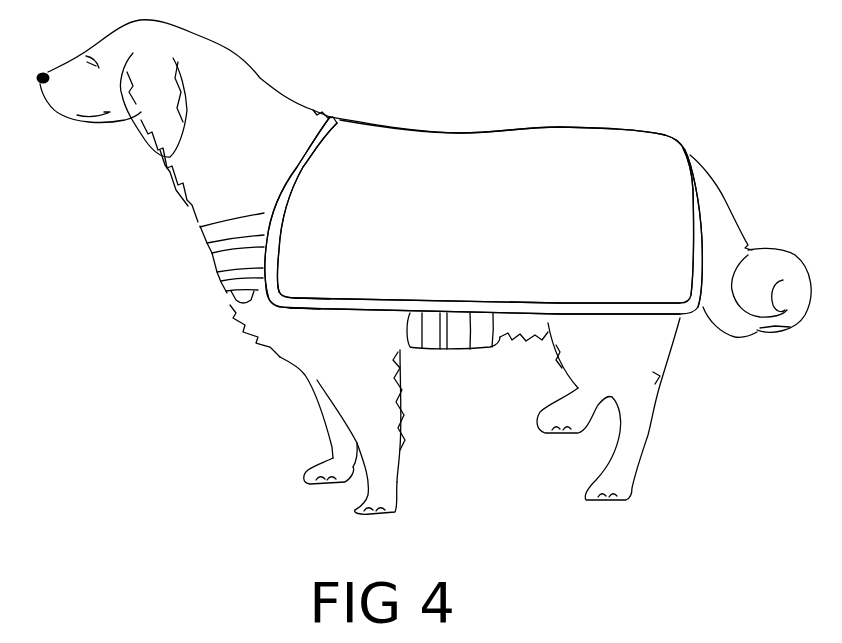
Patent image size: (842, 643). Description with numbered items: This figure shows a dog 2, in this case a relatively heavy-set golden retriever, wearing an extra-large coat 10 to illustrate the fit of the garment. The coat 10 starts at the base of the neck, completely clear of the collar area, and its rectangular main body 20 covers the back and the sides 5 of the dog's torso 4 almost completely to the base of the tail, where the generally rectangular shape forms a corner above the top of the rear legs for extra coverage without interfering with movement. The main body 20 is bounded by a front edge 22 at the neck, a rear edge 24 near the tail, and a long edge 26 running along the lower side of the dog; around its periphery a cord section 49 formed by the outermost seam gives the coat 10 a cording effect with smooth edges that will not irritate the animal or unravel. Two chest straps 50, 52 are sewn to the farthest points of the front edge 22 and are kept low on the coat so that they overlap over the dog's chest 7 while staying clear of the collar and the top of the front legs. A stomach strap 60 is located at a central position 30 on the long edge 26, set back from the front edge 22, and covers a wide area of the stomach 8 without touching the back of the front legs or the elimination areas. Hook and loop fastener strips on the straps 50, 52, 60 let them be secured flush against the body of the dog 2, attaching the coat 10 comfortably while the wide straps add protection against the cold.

The dog 2 is at (225, 362).
The torso 4 is at (317, 113).
The sides 5 is at (538, 166).
The chest 7 is at (185, 203).
The stomach 8 is at (515, 338).
The coat 10 is at (479, 121).
The main body 20 is at (406, 254).
The front edge 22 is at (290, 163).
The rear edge 24 is at (693, 160).
The long edge 26 is at (308, 310).
The central positions 30 is at (473, 295).
The cord section 49 is at (695, 235).
The chest strap 50 is at (222, 265).
The chest strap 52 is at (240, 298).
The stomach strap 60 is at (447, 330).